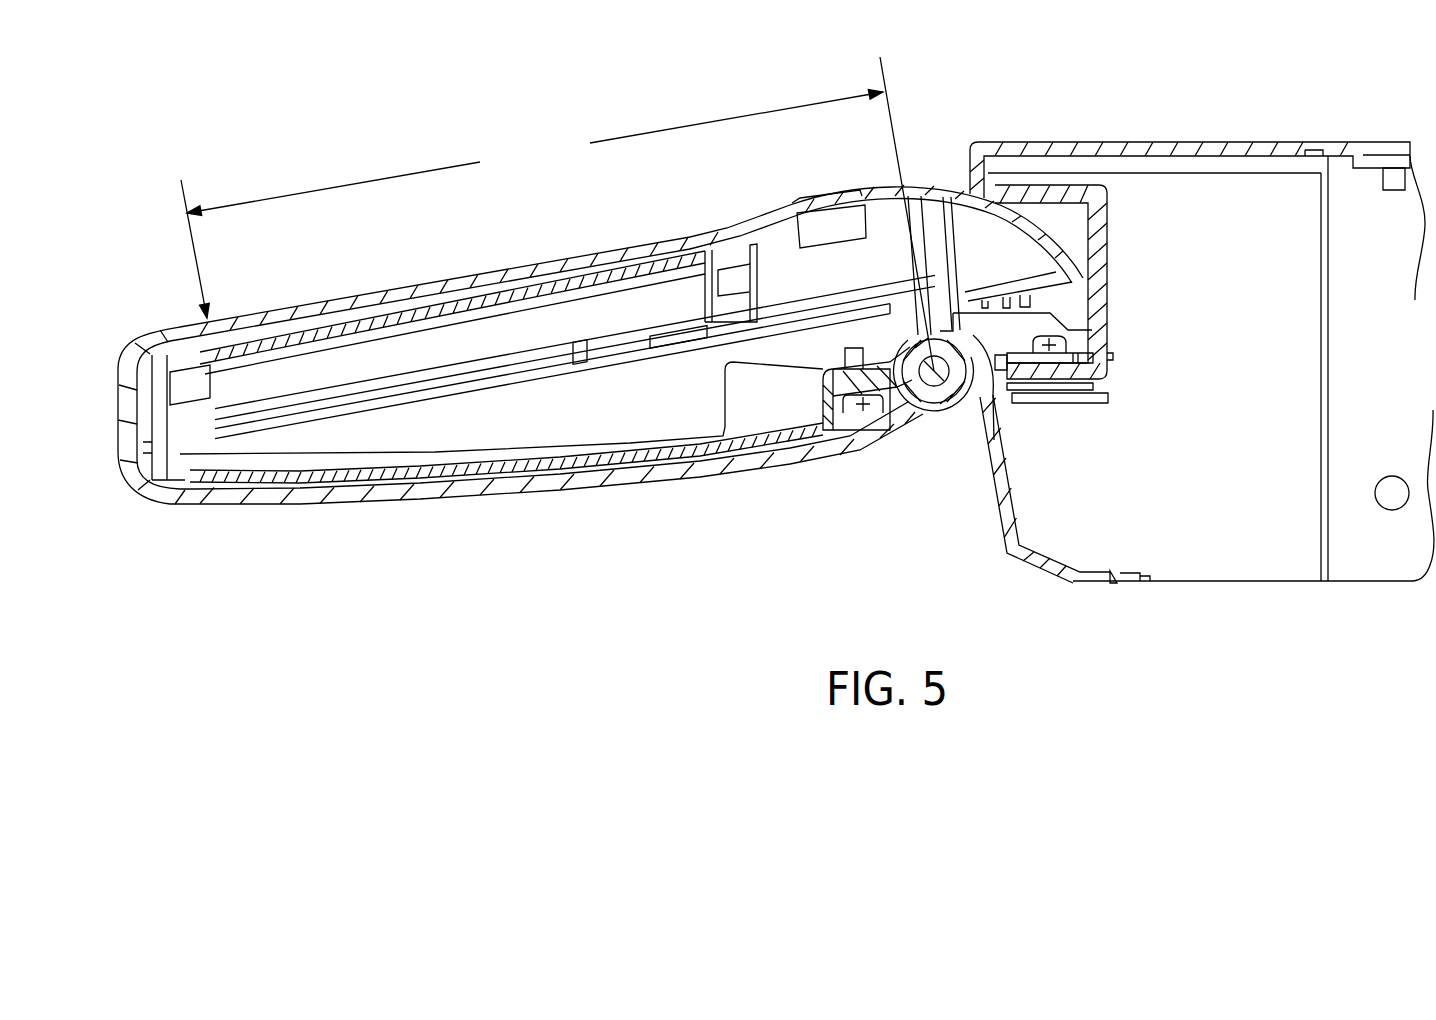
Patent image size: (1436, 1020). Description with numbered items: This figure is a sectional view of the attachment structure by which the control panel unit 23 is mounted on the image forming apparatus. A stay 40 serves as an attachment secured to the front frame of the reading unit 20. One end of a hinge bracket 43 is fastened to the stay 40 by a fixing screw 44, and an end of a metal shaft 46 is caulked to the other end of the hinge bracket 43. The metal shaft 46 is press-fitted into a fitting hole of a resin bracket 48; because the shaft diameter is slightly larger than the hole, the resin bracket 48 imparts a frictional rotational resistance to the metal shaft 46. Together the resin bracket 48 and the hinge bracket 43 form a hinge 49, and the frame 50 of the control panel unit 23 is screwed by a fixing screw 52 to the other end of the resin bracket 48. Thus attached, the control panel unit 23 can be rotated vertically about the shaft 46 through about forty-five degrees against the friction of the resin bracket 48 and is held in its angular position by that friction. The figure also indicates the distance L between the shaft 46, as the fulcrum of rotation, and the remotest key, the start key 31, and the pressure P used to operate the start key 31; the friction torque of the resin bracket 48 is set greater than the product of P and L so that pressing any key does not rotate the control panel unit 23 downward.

The reading unit 20 is at (1122, 142).
The control panel unit 23 is at (510, 502).
The start key 31 is at (213, 313).
The stay 40 is at (1108, 238).
The hinge bracket 43 is at (1010, 328).
The fixing screw 44 is at (1072, 335).
The metal shaft 46 is at (955, 412).
The resin bracket 48 is at (936, 403).
The hinge 49 is at (998, 394).
The frame 50 is at (752, 467).
The fixing screw 52 is at (864, 415).
The pressure P is at (197, 270).
The distance L is at (557, 214).